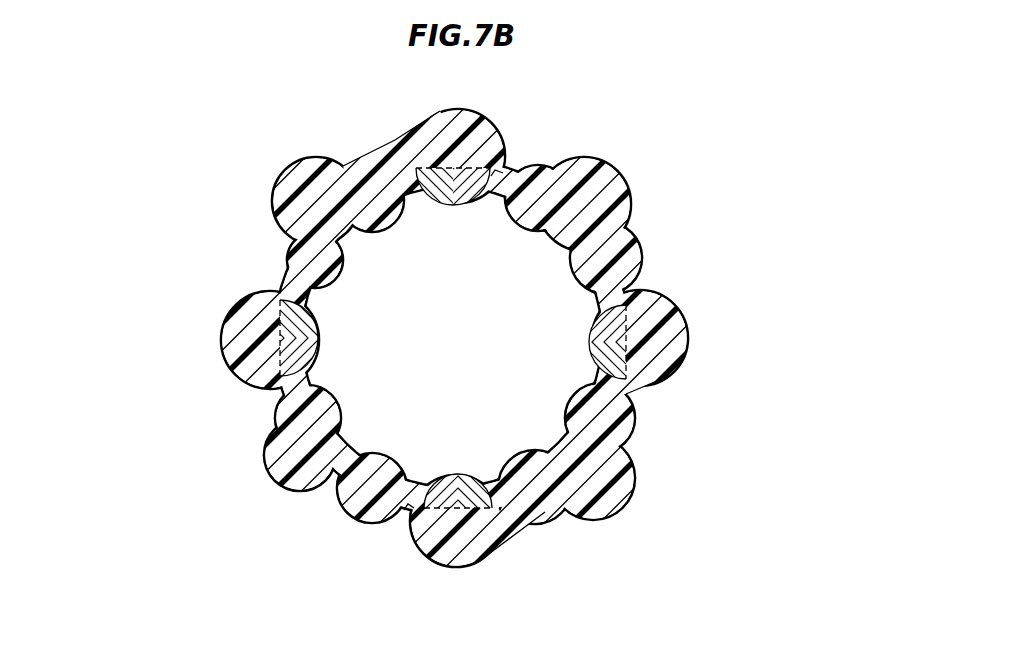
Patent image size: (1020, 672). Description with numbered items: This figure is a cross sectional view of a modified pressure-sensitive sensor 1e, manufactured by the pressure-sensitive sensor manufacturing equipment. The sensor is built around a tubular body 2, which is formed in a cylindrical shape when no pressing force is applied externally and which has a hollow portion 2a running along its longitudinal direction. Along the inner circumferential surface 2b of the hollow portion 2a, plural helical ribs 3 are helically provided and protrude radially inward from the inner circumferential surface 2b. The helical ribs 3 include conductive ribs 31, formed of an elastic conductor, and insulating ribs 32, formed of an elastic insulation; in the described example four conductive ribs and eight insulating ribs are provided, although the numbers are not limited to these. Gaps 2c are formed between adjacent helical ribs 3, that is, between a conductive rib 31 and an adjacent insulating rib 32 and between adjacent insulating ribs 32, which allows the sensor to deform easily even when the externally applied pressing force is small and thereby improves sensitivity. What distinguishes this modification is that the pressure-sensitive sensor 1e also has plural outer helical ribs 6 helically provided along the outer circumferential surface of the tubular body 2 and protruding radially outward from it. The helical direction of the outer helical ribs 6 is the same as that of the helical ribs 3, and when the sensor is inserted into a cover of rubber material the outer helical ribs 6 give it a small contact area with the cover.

The pressure-sensitive sensor 1e is at (298, 131).
The tubular body 2 is at (276, 322).
The hollow portion 2a is at (353, 363).
The inner circumferential surface 2b is at (330, 456).
The gap 2c is at (408, 510).
The helical rib 3 is at (758, 53).
The conductive rib 31 is at (467, 168).
The insulating rib 32 is at (538, 198).
The outer helical rib 6 is at (686, 340).